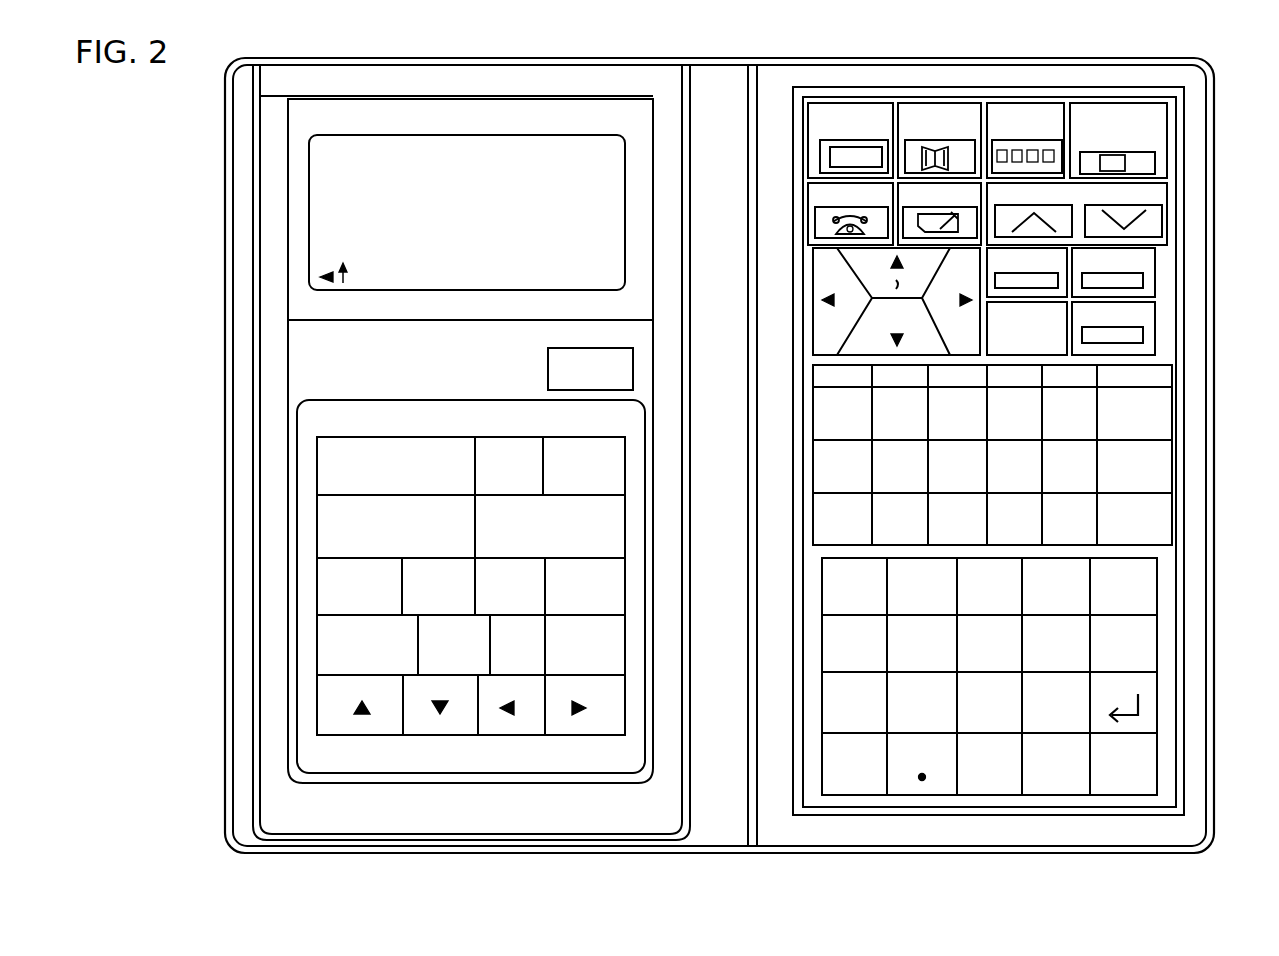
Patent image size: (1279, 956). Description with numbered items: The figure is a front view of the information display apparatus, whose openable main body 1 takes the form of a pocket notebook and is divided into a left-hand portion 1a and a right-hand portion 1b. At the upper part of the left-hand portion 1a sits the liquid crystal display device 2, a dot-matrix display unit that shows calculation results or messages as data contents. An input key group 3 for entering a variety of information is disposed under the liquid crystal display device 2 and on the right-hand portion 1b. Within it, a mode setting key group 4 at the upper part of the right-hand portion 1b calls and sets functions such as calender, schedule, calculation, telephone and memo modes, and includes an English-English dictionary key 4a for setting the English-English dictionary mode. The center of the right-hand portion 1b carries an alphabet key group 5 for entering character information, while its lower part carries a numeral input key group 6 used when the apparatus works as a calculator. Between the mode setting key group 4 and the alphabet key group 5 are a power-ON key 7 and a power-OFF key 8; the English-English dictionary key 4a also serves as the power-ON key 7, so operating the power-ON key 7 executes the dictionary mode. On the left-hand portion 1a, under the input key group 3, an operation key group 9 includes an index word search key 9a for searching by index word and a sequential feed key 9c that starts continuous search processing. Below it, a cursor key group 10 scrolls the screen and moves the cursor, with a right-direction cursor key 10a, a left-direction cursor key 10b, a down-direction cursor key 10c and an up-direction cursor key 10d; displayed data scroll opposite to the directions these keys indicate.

The main body 1 is at (709, 57).
The left-hand portion 1a is at (424, 86).
The right-hand portion 1b is at (910, 76).
The liquid crystal display device 2 is at (340, 148).
The input key group 3 is at (311, 585).
The mode setting key group 4 is at (1168, 181).
The English-English dictionary key 4a is at (1152, 163).
The alphabet key group 5 is at (1178, 465).
The numeral input key group 6 is at (1166, 652).
The power-ON key 7 is at (1140, 264).
The power-OFF key 8 is at (1058, 261).
The operation key group 9 is at (311, 525).
The index word search key 9a is at (330, 463).
The sequential feed key 9c is at (577, 440).
The cursor key group 10 is at (623, 423).
The right-direction cursor key 10a is at (587, 718).
The left-direction cursor key 10b is at (515, 718).
The down-direction cursor key 10c is at (450, 718).
The up-direction cursor key 10d is at (374, 722).